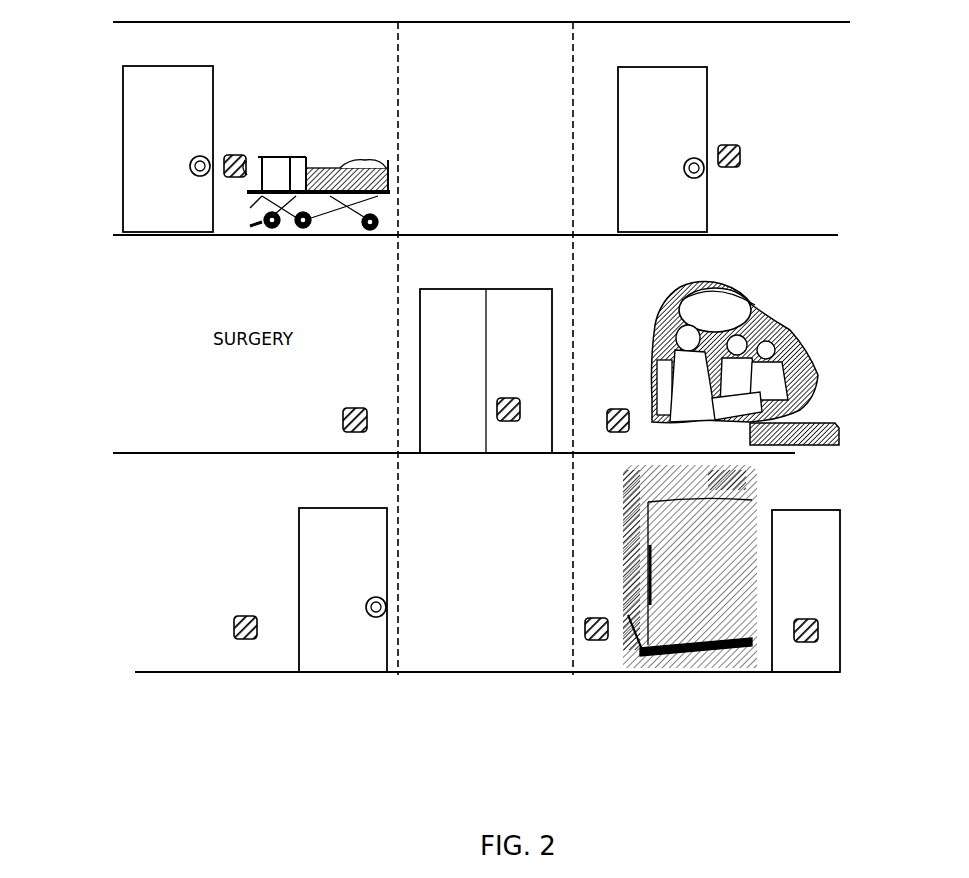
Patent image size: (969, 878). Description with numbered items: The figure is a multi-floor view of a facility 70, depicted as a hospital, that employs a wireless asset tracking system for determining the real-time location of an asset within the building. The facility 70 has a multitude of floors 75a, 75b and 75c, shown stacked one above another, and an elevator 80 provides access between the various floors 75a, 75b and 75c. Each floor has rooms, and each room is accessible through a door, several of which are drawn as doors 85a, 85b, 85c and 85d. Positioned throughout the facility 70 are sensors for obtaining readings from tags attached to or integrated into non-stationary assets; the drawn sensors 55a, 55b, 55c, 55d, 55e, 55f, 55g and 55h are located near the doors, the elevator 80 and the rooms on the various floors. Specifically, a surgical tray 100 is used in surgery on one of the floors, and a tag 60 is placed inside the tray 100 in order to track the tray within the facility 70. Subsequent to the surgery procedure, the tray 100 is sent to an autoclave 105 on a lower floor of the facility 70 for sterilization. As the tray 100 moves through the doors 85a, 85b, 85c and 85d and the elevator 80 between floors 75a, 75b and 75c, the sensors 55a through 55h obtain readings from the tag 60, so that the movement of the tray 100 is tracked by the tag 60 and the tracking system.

The facility 70 is at (350, 726).
The floor 75a is at (170, 572).
The floor 75b is at (804, 266).
The floor 75c is at (148, 53).
The elevator 80 is at (420, 311).
The door 85a is at (299, 518).
The door 85b is at (840, 553).
The door 85c is at (123, 132).
The door 85d is at (708, 122).
The sensor 55a is at (235, 625).
The sensor 55b is at (596, 641).
The sensor 55c is at (816, 642).
The sensor 55d is at (345, 418).
The sensor 55e is at (517, 403).
The sensor 55f is at (624, 410).
The sensor 55g is at (233, 154).
The sensor 55h is at (741, 158).
The tag 60 is at (838, 422).
The surgical tray 100 is at (752, 435).
The autoclave 105 is at (750, 488).